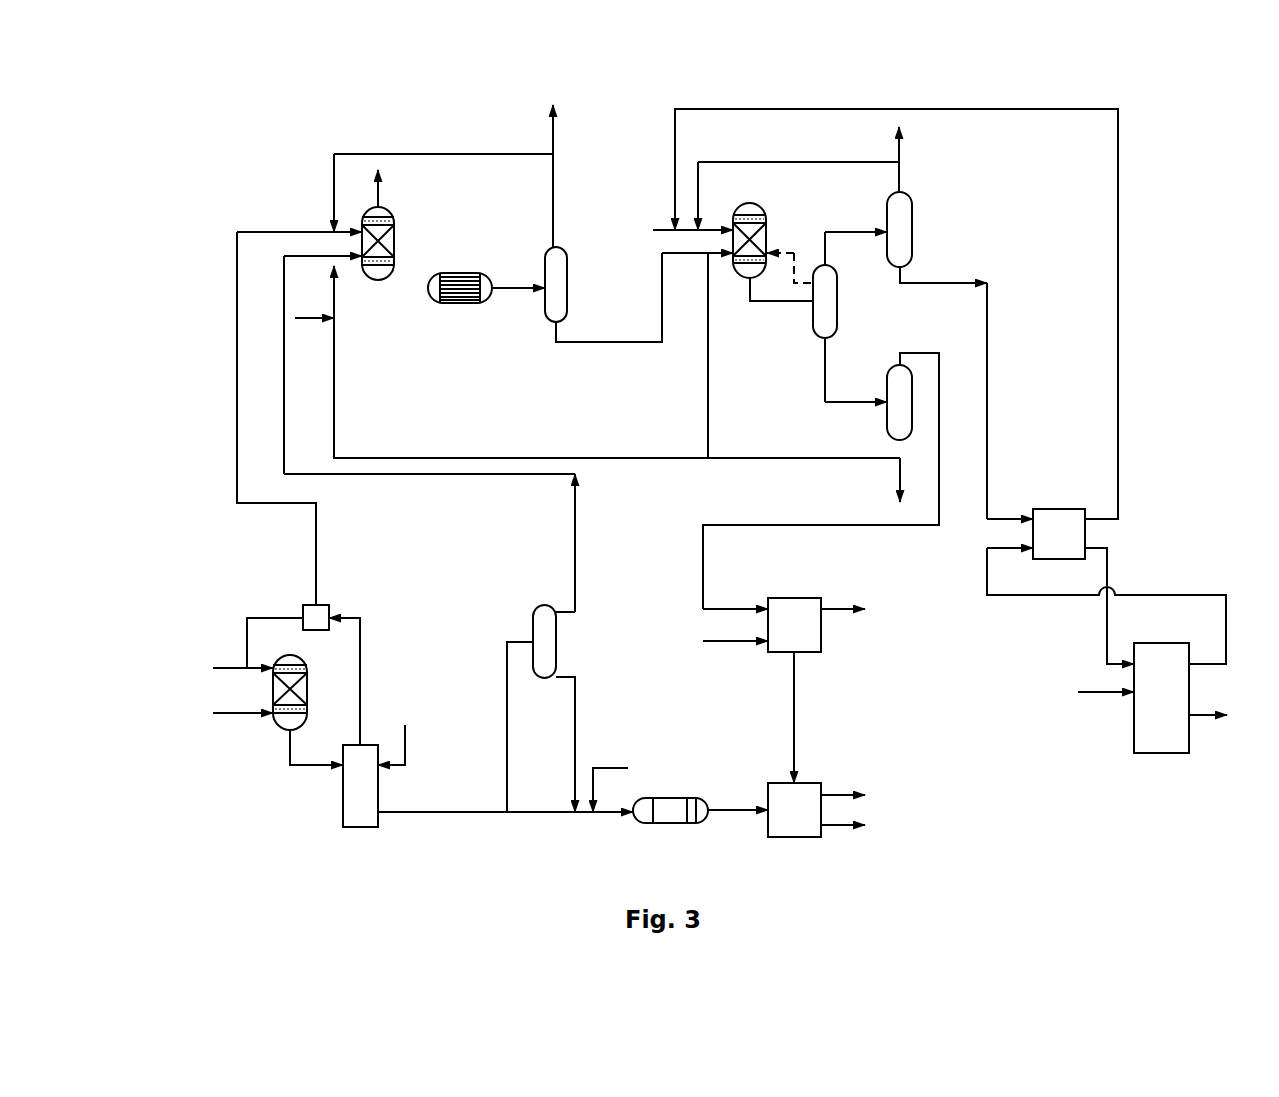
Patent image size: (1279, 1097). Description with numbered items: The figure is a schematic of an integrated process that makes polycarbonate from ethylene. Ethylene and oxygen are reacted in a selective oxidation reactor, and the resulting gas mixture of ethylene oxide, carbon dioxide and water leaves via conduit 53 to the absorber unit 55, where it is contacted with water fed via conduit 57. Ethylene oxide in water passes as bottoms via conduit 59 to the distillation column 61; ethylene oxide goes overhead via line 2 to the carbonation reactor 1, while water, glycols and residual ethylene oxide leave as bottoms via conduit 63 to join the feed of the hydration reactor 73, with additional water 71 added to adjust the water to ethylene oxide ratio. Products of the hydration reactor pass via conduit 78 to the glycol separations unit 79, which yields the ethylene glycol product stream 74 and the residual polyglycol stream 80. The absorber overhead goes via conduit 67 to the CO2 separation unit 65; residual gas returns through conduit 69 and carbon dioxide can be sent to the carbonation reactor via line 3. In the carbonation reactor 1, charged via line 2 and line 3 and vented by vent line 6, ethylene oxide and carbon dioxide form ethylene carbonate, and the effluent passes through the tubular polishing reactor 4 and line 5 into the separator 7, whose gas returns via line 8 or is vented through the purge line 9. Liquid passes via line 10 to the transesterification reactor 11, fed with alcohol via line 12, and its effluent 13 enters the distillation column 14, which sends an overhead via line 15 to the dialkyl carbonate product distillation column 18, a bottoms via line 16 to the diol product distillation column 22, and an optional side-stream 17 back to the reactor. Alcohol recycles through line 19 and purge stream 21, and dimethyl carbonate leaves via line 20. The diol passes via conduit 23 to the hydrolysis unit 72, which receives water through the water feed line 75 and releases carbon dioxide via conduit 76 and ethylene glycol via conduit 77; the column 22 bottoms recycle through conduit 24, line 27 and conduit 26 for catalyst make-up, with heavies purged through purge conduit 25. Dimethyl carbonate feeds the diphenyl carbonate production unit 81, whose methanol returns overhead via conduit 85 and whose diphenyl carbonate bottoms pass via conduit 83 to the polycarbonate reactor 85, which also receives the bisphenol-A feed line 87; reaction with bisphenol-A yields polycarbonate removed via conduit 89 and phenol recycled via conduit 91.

The carbonation reactor 1 is at (395, 247).
The line 2 is at (284, 276).
The line 3 is at (318, 228).
The tubular polishing reactor 4 is at (460, 273).
The line 5 is at (512, 290).
The vent line 6 is at (380, 200).
The separator 7 is at (545, 262).
The line 8 is at (448, 154).
The purge line 9 is at (556, 140).
The line 10 is at (646, 343).
The transesterification reactor 11 is at (760, 204).
The line 12 is at (665, 226).
The line 13 is at (782, 303).
The distillation column 14 is at (838, 302).
The line 15 is at (840, 232).
The line 16 is at (840, 402).
The side-stream 17 is at (790, 252).
The dialkyl carbonate product distillation column 18 is at (913, 228).
The line 19 is at (785, 162).
The line 20 is at (940, 283).
The purge stream 21 is at (904, 153).
The diol product distillation column 22 is at (887, 416).
The conduit 23 is at (910, 353).
The conduit 24 is at (458, 458).
The purge conduit 25 is at (896, 466).
The conduit 26 is at (316, 322).
The line 27 is at (710, 403).
The conduit 53 is at (288, 748).
The absorber unit 55 is at (343, 795).
The conduit 57 is at (406, 746).
The conduit 59 is at (417, 814).
The distillation column 61 is at (556, 632).
The conduit 63 is at (577, 722).
The CO2 separation unit 65 is at (320, 605).
The conduit 67 is at (362, 662).
The conduit 69 is at (272, 616).
The conduit 71 is at (607, 768).
The hydrolysis unit 72 is at (823, 632).
The hydration reactor 73 is at (672, 824).
The ethylene glycol product stream 74 is at (832, 793).
The water feed 75 is at (724, 643).
The conduit 76 is at (828, 598).
The conduit 77 is at (797, 718).
The conduit 78 is at (752, 806).
The glycol separations unit 79 is at (790, 781).
The residual polyglycol stream 80 is at (832, 828).
The diphenyl carbonate production unit 81 is at (1058, 509).
The conduit 83 is at (1109, 562).
The polycarbonate reactor 85 is at (1133, 733).
The feed stream 87 is at (1093, 690).
The conduit 89 is at (1200, 718).
The conduit 91 is at (1224, 620).